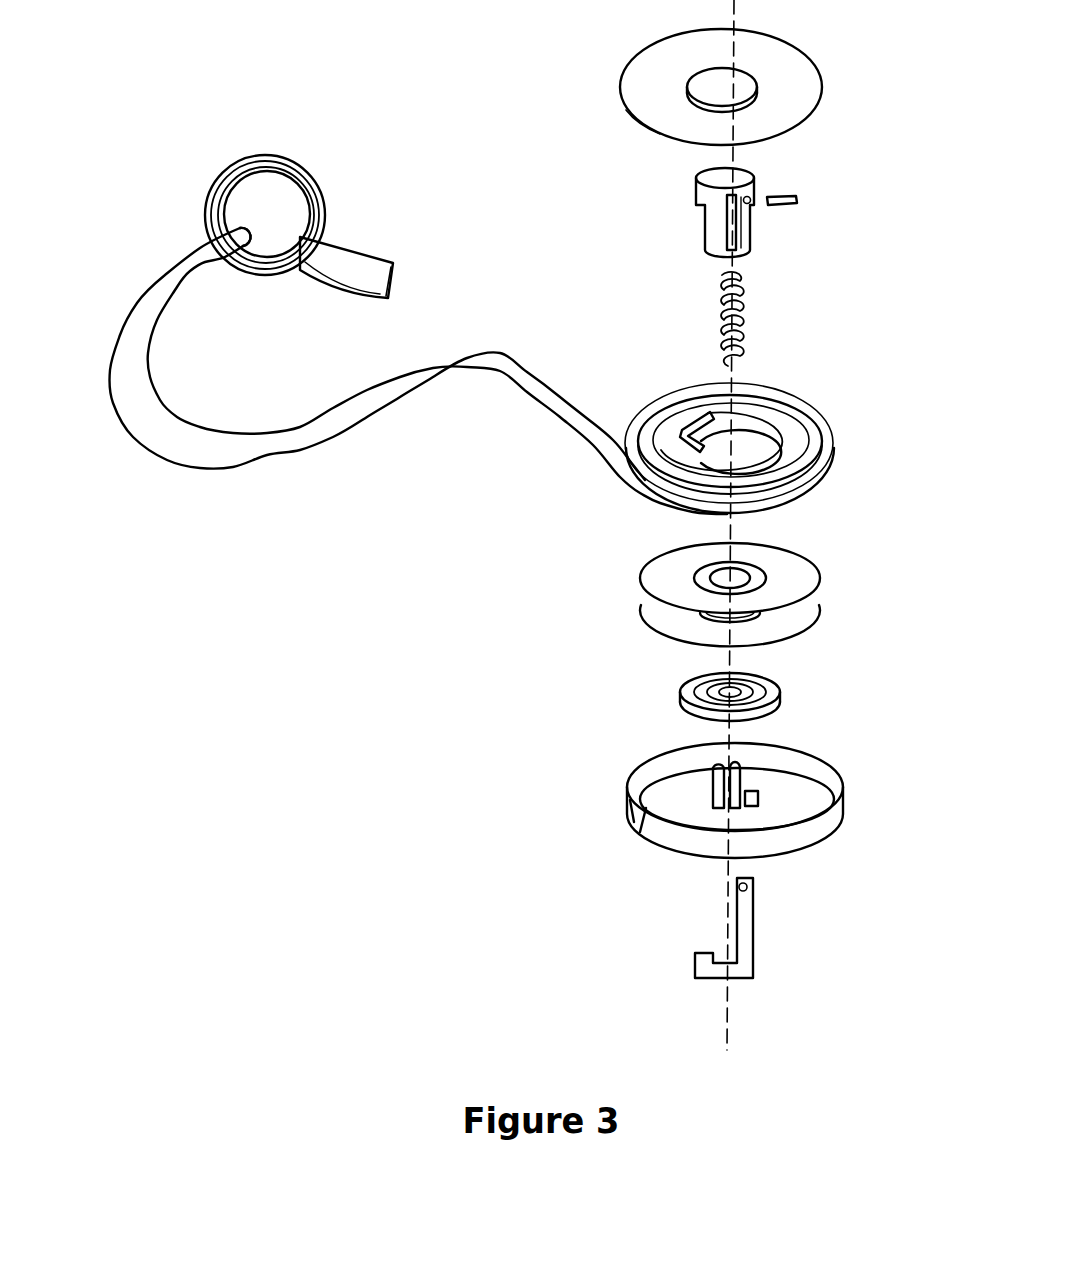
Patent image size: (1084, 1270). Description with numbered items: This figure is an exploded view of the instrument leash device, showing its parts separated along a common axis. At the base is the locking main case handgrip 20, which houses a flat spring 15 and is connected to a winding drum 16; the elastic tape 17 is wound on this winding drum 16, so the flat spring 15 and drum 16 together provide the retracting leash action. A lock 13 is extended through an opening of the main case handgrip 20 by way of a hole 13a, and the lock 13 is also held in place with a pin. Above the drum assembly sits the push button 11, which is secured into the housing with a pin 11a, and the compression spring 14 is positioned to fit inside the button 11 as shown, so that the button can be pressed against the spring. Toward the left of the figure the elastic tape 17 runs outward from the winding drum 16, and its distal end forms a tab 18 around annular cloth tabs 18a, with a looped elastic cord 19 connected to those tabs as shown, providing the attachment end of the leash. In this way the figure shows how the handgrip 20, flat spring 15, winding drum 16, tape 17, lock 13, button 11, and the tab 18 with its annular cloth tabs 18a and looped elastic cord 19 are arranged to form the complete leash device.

The push button 11 is at (755, 175).
The pin 11a is at (788, 209).
The lock 13 is at (770, 952).
The hole 13a is at (753, 801).
The compression spring 14 is at (730, 313).
The flat spring 15 is at (770, 690).
The winding drum 16 is at (628, 568).
The elastic tape 17 is at (225, 483).
The tab 18 is at (203, 268).
The annular cloth tabs 18a is at (195, 198).
The looped elastic cord 19 is at (370, 243).
The main case handgrip 20 is at (655, 840).